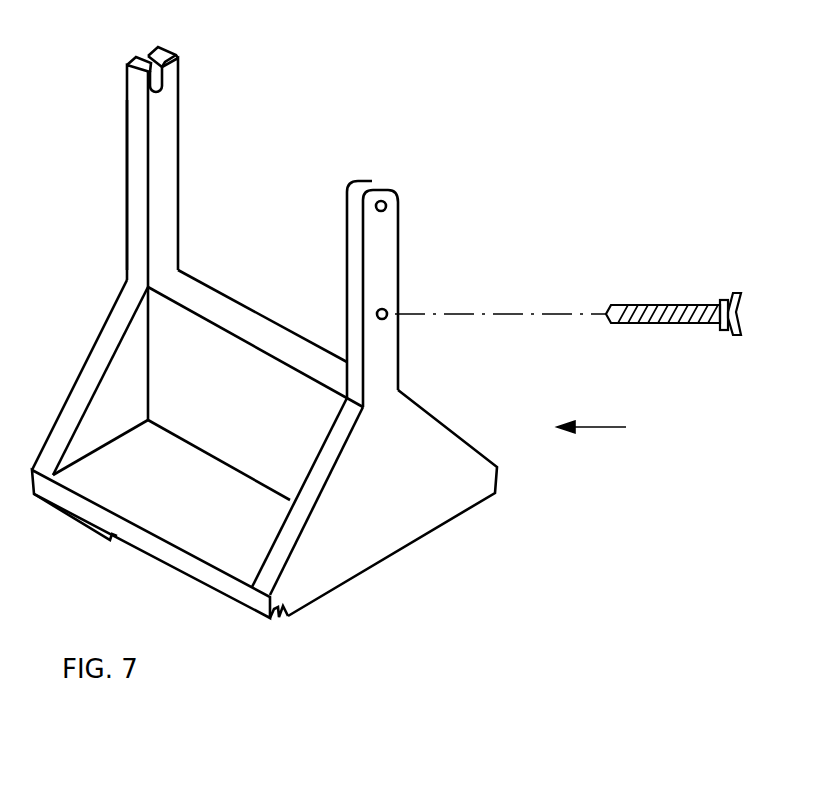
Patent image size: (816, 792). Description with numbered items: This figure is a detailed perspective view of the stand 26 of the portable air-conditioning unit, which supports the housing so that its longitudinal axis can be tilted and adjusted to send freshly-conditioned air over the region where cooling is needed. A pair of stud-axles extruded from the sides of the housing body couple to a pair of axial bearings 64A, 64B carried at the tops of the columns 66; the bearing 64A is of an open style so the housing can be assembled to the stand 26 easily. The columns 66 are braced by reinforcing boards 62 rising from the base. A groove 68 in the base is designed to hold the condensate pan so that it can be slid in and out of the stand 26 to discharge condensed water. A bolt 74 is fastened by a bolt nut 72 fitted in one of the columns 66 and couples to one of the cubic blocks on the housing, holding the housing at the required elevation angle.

The stand 26 is at (608, 428).
The reinforcing boards 62 is at (165, 350).
The axial bearing 64A is at (167, 50).
The axial bearing 64B is at (373, 182).
The columns 66 is at (182, 175).
The groove 68 is at (290, 616).
The bolt nut 72 is at (388, 312).
The bolt 74 is at (675, 303).